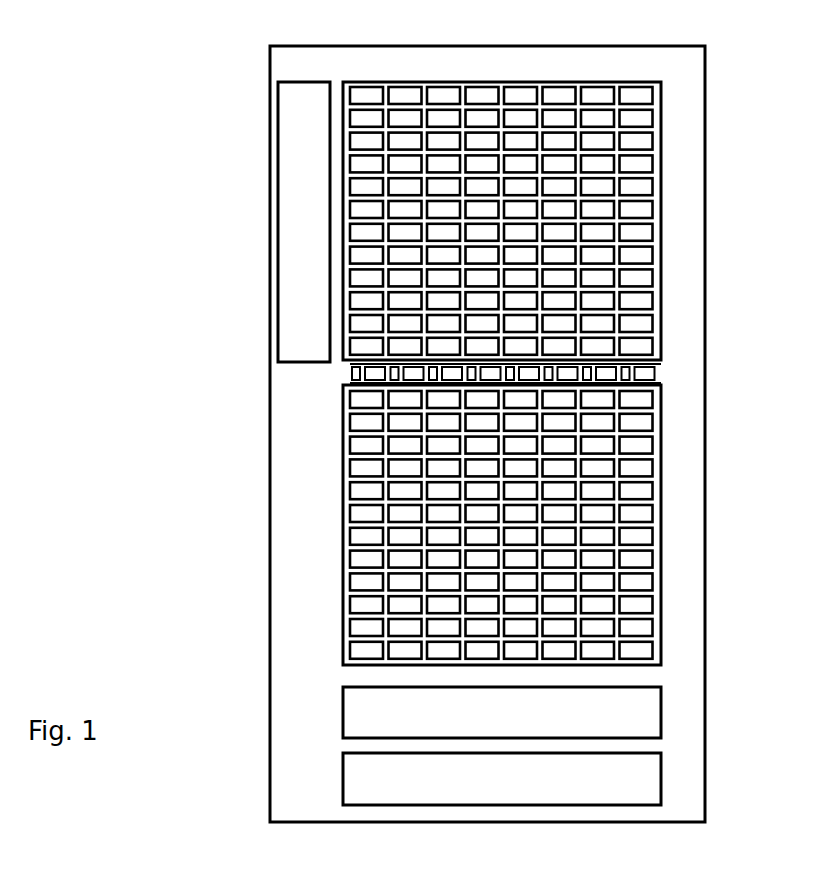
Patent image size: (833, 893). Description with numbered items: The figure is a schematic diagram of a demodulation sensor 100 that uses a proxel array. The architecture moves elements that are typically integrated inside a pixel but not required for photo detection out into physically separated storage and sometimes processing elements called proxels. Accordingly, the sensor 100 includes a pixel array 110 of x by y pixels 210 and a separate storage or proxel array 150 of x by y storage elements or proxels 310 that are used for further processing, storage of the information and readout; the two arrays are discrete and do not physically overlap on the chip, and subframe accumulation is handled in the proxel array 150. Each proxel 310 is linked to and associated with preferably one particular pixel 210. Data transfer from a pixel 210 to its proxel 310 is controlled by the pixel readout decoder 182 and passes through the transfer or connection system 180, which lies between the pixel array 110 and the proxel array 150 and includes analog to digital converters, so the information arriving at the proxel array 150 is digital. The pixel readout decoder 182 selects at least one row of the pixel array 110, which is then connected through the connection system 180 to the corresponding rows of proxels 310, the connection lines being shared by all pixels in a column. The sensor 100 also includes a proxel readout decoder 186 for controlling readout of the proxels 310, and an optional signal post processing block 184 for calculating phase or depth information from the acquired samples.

The demodulation sensor 100 is at (722, 48).
The pixel array 110 is at (583, 221).
The proxel array 150 is at (573, 525).
The transfer or connection system 180 is at (680, 370).
The pixel readout decoder 182 is at (304, 382).
The signal post processing block 184 is at (680, 715).
The proxel readout decoder 186 is at (680, 781).
The pixel 210 is at (640, 97).
The proxel 310 is at (640, 401).